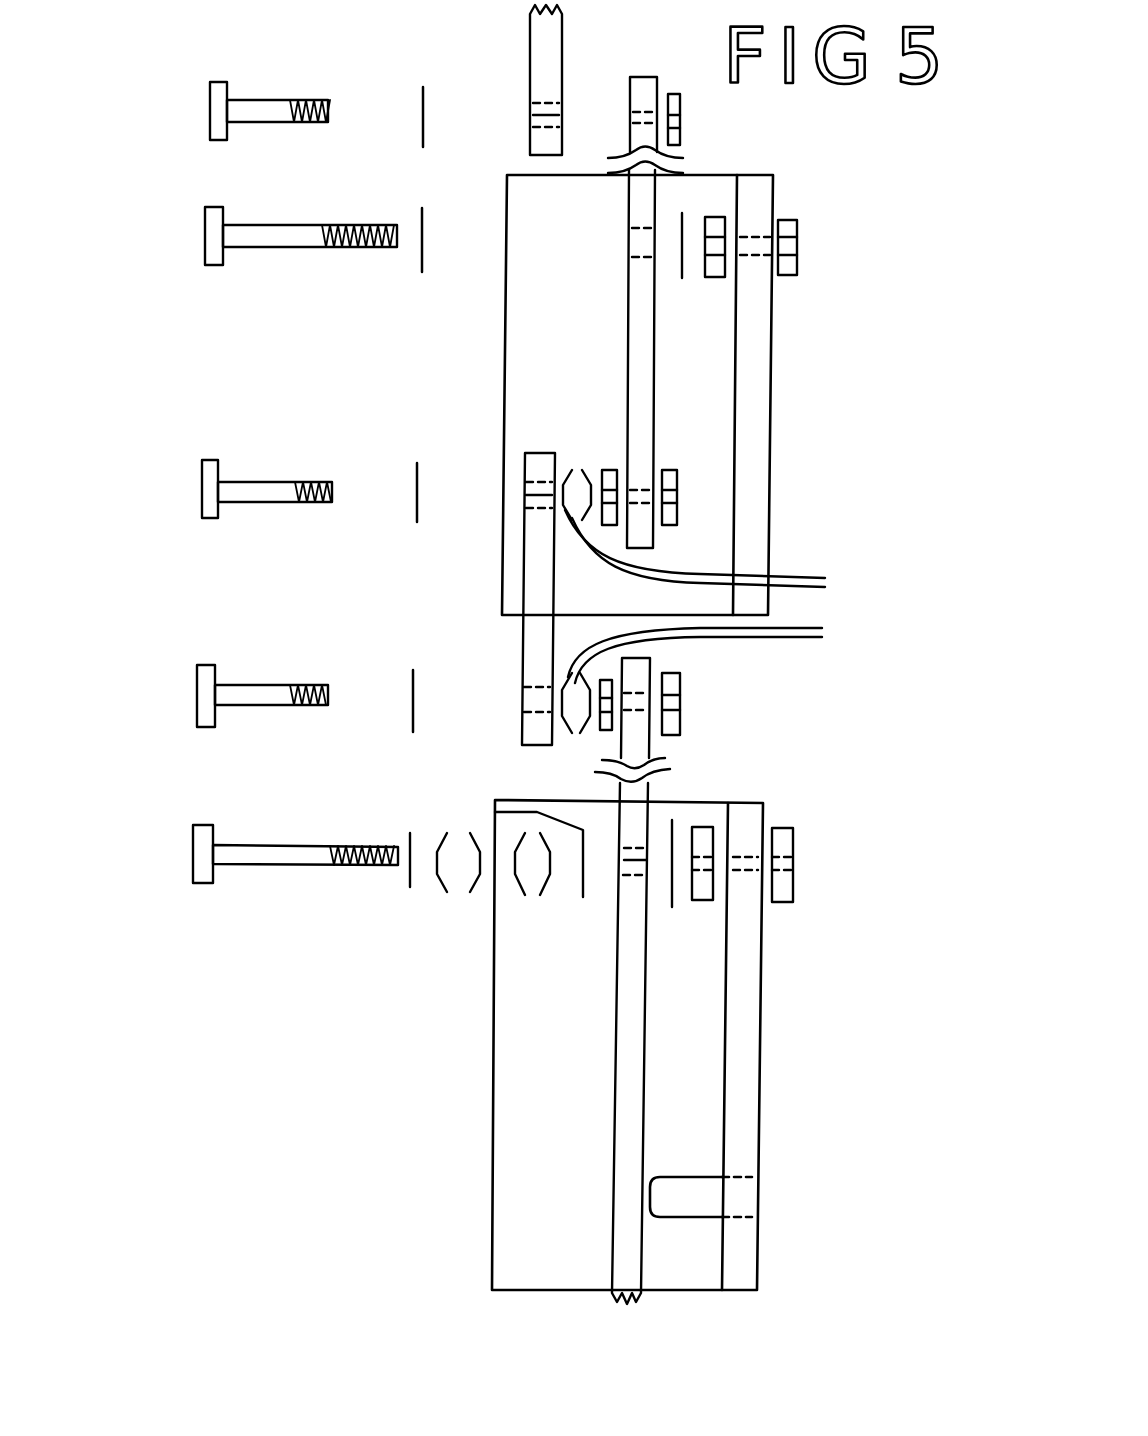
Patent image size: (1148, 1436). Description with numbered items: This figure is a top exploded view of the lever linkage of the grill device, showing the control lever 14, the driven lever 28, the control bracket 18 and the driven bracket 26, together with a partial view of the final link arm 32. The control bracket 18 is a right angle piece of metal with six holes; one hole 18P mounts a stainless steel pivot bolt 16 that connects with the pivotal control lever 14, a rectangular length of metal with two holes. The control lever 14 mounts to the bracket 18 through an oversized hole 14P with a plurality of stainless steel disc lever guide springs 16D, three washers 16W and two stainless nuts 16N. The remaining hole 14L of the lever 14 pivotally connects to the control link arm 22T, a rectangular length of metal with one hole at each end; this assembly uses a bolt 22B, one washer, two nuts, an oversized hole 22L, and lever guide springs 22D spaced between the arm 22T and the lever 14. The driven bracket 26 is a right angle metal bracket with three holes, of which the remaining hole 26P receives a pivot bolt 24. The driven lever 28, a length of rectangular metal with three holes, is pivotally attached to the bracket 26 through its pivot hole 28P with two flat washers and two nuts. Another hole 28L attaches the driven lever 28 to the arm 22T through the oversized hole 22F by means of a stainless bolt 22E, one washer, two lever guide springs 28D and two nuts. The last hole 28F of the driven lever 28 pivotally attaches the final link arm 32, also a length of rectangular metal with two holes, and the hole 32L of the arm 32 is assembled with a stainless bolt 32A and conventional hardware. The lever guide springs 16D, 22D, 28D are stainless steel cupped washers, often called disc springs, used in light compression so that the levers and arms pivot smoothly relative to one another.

The control lever 14 is at (628, 1097).
The remaining hole of control lever 14L is at (632, 703).
The oversized hole 14P is at (630, 857).
The pivot bolt 16 is at (207, 850).
The lever guide springs 16D is at (537, 890).
The stainless nuts 16N is at (700, 882).
The washers 16W is at (495, 812).
The control bracket 18 is at (572, 1014).
The hole 18P is at (740, 857).
The bolt 22B is at (210, 692).
The lever guide springs 22D is at (738, 670).
The stainless bolt 22E is at (213, 490).
The oversized hole 22F is at (537, 493).
The oversized hole 22L is at (537, 707).
The control link arm 22T is at (540, 588).
The pivot bolt 24 is at (217, 232).
The driven bracket 26 is at (595, 325).
The remaining hole 26P is at (753, 245).
The driven lever 28 is at (645, 397).
The lever guide springs 28D is at (739, 539).
The last hole of driven lever 28F is at (628, 122).
The hole 28L is at (637, 493).
The pivot hole 28P is at (648, 240).
The final link arm 32 is at (543, 52).
The stainless bolt 32A is at (222, 110).
The hole 32L is at (543, 113).